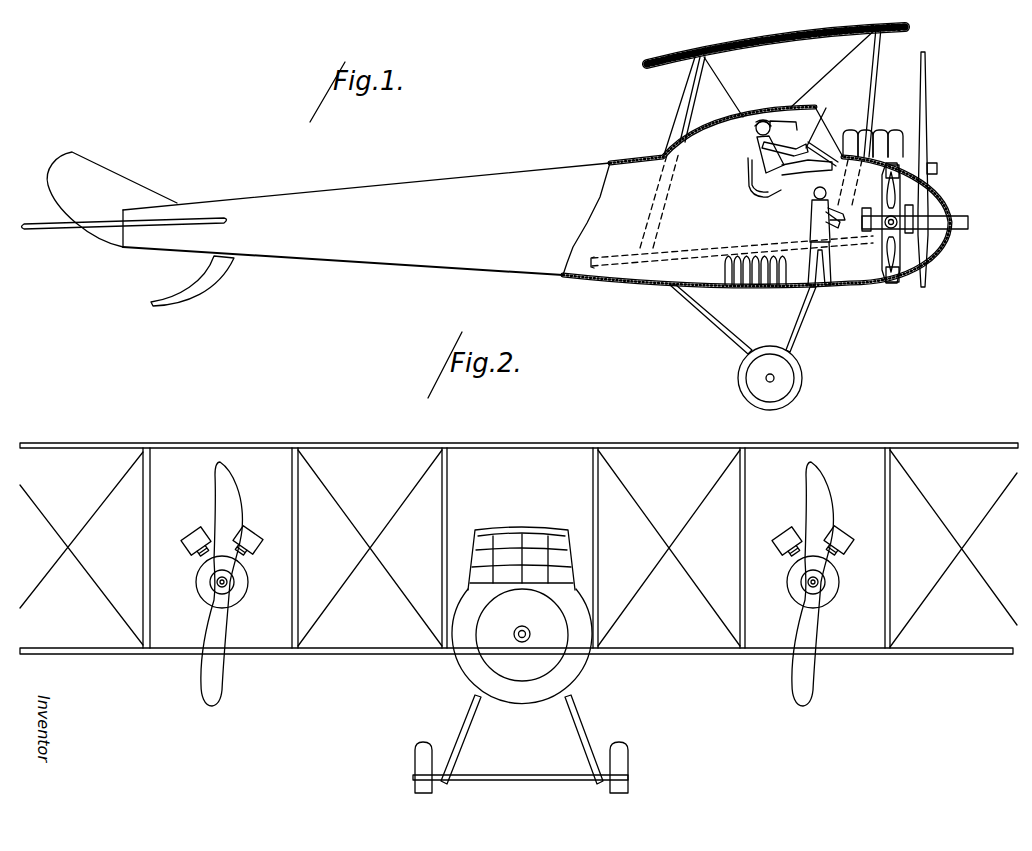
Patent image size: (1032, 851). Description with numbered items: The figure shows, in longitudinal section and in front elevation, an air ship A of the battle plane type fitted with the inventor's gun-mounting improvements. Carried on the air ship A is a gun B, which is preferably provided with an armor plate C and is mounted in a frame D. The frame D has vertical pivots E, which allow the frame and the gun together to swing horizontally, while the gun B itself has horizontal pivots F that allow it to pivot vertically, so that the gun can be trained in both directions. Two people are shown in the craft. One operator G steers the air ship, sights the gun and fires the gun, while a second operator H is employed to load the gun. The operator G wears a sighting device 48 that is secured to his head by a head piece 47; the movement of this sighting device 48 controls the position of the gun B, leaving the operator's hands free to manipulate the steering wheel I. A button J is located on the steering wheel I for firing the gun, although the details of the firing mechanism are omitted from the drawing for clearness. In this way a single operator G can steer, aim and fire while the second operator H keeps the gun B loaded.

In FIG. 1, the air ship A is at (600, 283).
In FIG. 2, the air ship A is at (626, 444).
In FIG. 1, the gun B is at (965, 229).
In FIG. 2, the gun B is at (530, 640).
In FIG. 1, the armor plate C is at (943, 200).
In FIG. 2, the armor plate C is at (548, 620).
In FIG. 1, the frame D is at (883, 247).
In FIG. 1, the vertical pivots E is at (893, 172).
In FIG. 1, the horizontal pivots F is at (893, 225).
In FIG. 1, the operator G is at (757, 151).
In FIG. 1, the second operator H is at (809, 218).
In FIG. 1, the steering wheel I is at (818, 143).
In FIG. 1, the button J is at (818, 121).
In FIG. 1, the head piece 47 is at (756, 116).
In FIG. 1, the sighting device 48 is at (784, 121).